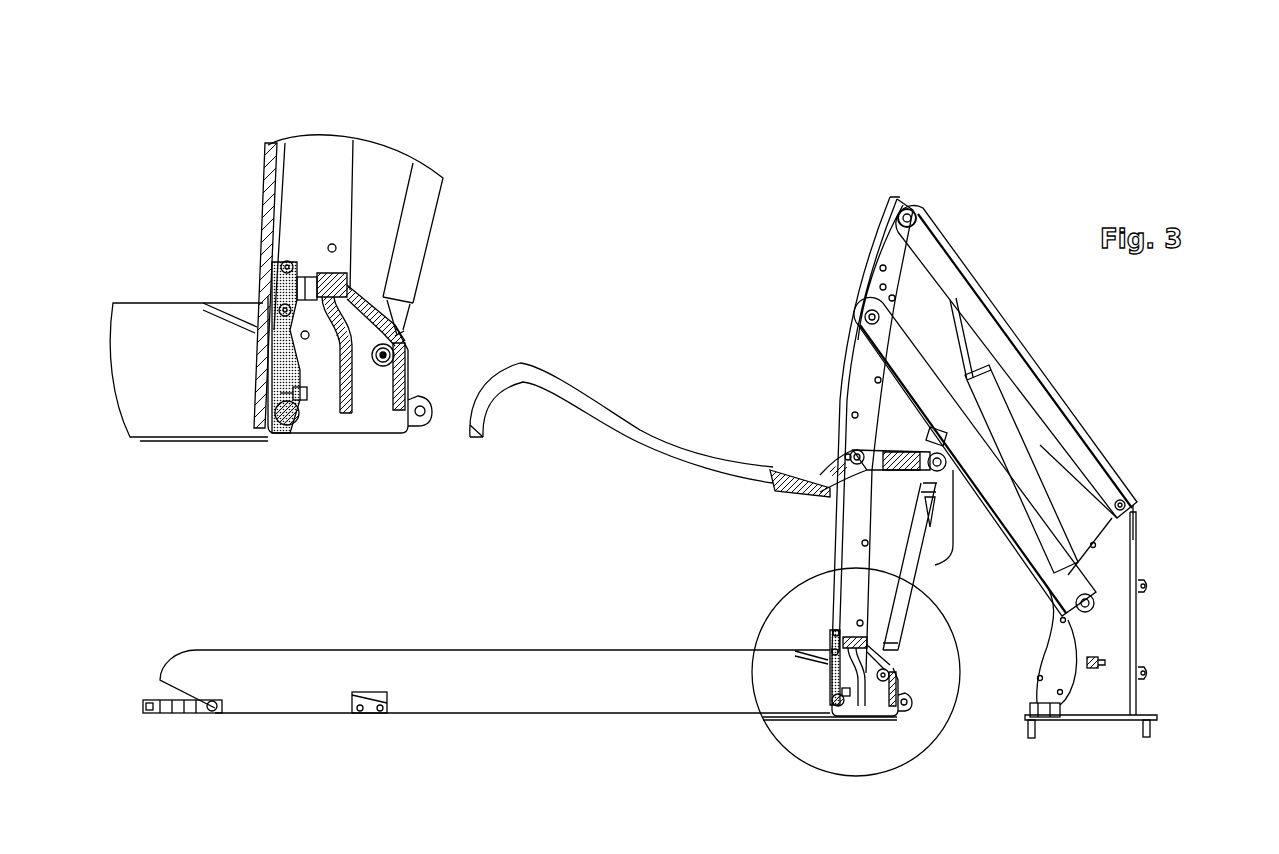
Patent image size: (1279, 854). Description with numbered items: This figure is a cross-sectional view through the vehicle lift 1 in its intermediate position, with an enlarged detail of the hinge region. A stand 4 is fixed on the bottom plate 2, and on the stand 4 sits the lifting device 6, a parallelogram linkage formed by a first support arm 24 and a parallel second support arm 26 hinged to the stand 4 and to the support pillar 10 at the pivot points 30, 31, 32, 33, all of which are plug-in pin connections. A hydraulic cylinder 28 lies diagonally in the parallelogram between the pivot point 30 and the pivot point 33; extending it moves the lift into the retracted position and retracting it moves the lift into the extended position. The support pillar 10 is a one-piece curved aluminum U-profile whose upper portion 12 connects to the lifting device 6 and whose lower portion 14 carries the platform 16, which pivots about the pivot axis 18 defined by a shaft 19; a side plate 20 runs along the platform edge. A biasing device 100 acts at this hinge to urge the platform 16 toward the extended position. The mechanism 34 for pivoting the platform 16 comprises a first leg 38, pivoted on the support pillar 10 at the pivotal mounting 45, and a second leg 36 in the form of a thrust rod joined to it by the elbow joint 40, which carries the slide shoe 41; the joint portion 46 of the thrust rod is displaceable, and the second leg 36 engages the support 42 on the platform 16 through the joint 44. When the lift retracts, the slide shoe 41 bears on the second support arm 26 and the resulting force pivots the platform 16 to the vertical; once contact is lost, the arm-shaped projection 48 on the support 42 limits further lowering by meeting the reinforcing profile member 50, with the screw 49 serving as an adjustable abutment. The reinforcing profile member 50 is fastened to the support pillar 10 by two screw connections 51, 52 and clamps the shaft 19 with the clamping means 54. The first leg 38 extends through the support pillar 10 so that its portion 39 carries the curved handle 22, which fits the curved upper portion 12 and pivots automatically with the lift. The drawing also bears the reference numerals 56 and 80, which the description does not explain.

The vehicle lift 1 is at (1062, 112).
The bottom plate 2 is at (1108, 727).
The stand 4 is at (1122, 620).
The lifting device 6 is at (1068, 237).
The support pillar 10 is at (258, 186).
The upper portion 12 is at (857, 242).
The lower portion 14 is at (718, 538).
The platform 16 is at (146, 340).
The pivot axis 18 is at (284, 428).
The shaft 19 is at (272, 418).
The side plate 20 is at (320, 686).
The handle 22 is at (555, 362).
The first support arm 24 is at (1056, 406).
The second support arm 26 is at (1050, 570).
The hydraulic cylinder 28 is at (1048, 474).
The pivot point 30 is at (1095, 603).
The pivot point 31 is at (1127, 503).
The pivot point 32 is at (910, 210).
The pivot point 33 is at (868, 315).
The mechanism 34 is at (938, 658).
The second leg 36 is at (422, 218).
The first leg 38 is at (822, 472).
The portion 39 is at (790, 468).
The joint 40 is at (945, 478).
The slide shoe 41 is at (932, 424).
The support 42 is at (374, 402).
The joint 44 is at (396, 355).
The pivotal mounting 45 is at (850, 450).
The joint portion 46 is at (420, 322).
The arm-shaped projection 48 is at (340, 272).
The screw 49 is at (305, 262).
The reinforcing profile member 50 is at (272, 284).
The screw connection 51 is at (283, 262).
The screw connection 52 is at (282, 302).
The clamping means 54 is at (312, 428).
The push rod 56 is at (912, 567).
The locking element 80 is at (830, 637).
The biasing device 100 is at (176, 276).